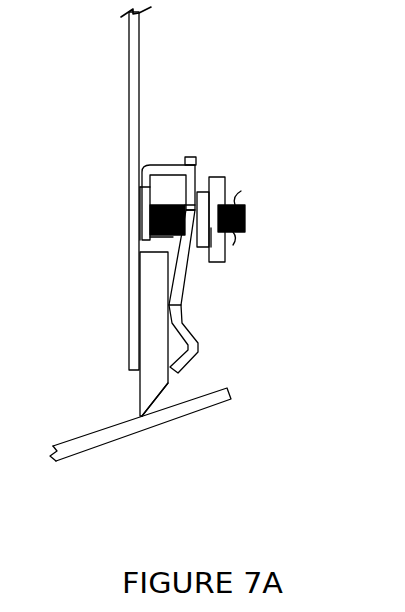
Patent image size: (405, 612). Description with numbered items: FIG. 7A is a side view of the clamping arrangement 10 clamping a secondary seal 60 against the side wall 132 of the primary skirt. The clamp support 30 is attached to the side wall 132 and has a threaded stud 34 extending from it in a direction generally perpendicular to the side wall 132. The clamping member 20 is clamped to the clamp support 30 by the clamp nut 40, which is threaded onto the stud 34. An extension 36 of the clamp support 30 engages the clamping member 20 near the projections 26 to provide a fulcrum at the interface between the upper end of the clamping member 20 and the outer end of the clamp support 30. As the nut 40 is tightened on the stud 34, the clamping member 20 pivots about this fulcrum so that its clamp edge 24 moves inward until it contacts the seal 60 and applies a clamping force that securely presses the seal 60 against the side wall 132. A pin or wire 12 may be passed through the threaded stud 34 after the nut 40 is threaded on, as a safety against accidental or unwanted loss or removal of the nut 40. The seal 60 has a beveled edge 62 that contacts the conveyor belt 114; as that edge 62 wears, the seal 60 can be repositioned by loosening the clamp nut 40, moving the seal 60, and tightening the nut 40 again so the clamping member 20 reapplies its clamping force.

The clamping arrangement 10 is at (208, 240).
The pin or wire 12 is at (238, 241).
The clamping member 20 is at (189, 290).
The clamp edge 24 is at (179, 372).
The projections 26 is at (197, 158).
The clamp support 30 is at (138, 211).
The threaded stud 34 is at (246, 222).
The extension 36 is at (167, 163).
The clamp nut 40 is at (210, 200).
The secondary seal 60 is at (157, 328).
The beveled edge 62 is at (142, 415).
The conveyor belt 114 is at (197, 413).
The side wall 132 is at (142, 82).